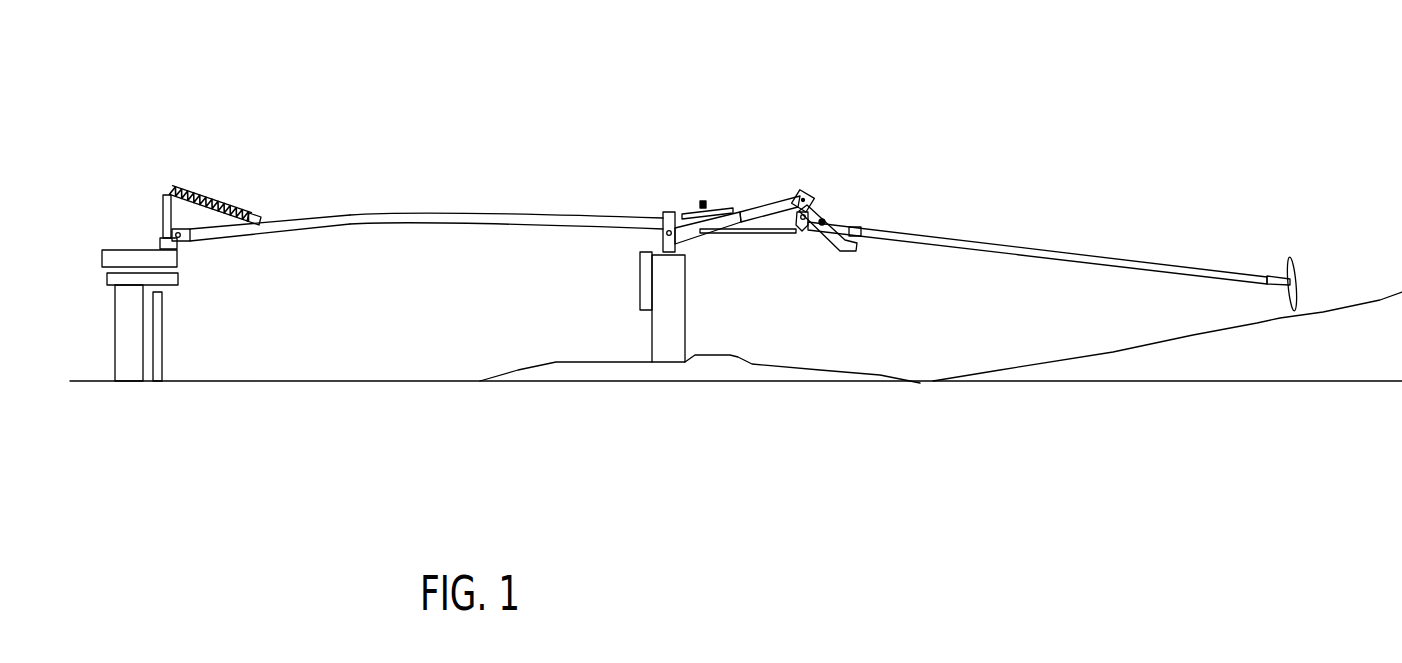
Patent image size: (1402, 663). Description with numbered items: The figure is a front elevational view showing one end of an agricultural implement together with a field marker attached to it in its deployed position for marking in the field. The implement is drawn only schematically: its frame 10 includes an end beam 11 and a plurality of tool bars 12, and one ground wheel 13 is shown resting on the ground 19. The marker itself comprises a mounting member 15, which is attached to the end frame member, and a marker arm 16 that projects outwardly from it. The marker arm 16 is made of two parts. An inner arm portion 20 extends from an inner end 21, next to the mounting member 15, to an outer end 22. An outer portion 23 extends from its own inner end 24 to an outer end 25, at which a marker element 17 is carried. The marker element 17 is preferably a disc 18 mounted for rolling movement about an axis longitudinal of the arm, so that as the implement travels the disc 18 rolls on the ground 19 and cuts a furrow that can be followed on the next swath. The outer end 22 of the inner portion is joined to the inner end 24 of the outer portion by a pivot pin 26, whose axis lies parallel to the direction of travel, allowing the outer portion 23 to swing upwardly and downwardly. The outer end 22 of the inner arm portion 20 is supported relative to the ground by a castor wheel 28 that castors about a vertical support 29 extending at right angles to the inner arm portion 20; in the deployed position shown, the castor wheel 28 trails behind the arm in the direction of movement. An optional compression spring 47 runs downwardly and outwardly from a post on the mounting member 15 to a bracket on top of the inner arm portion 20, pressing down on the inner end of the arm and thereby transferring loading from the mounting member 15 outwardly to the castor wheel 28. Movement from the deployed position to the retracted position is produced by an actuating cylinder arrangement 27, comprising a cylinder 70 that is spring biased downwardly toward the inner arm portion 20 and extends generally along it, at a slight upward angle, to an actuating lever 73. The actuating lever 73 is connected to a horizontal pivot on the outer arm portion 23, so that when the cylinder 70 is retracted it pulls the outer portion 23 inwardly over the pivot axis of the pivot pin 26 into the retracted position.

The frame 10 is at (100, 220).
The end beam 11 is at (172, 256).
The tool bars 12 is at (110, 277).
The ground wheel 13 is at (128, 350).
The mounting member 15 is at (180, 146).
The marker arm 16 is at (506, 193).
The marker element 17 is at (1304, 216).
The disc 18 is at (1297, 268).
The ground 19 is at (1263, 323).
The inner arm portion 20 is at (442, 222).
The inner end 21 is at (197, 236).
The outer end 22 is at (788, 233).
The outer portion 23 is at (992, 245).
The inner end 24 is at (815, 243).
The outer end 25 is at (1257, 278).
The pivot pin 26 is at (815, 212).
The actuating cylinder arrangement 27 is at (716, 187).
The castor wheel 28 is at (698, 330).
The support 29 is at (668, 212).
The compression spring 47 is at (222, 190).
The cylinder 70 is at (697, 233).
The actuating lever 73 is at (820, 217).